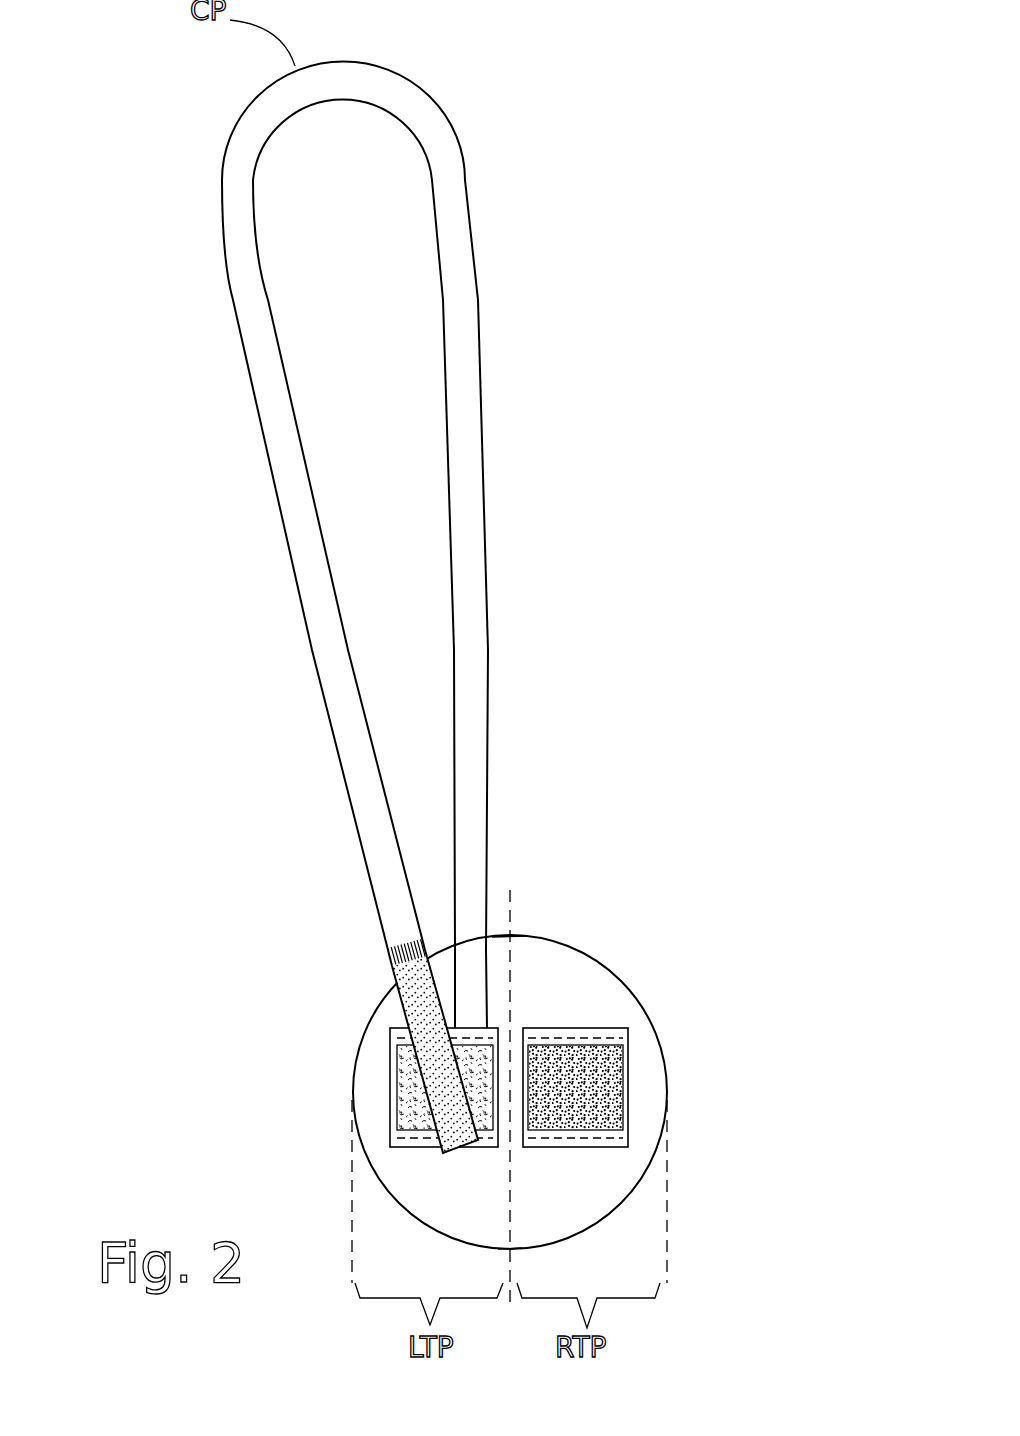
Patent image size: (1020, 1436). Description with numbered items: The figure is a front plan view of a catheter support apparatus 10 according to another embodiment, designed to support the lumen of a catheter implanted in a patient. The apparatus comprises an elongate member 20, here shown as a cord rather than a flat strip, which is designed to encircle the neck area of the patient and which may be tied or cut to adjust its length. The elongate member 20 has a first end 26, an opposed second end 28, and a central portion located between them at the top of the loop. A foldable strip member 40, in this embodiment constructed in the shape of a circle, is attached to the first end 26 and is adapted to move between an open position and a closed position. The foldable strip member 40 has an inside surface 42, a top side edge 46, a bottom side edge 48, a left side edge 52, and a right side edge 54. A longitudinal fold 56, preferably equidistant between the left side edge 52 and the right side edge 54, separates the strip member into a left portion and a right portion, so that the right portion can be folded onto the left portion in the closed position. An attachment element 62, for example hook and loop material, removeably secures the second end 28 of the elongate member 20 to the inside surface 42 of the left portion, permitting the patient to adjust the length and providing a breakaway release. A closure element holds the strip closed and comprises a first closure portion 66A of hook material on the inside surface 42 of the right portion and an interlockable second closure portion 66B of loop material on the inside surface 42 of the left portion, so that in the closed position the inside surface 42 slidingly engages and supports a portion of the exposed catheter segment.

The catheter support apparatus 10 is at (609, 294).
The elongate member 20 is at (195, 226).
The first end 26 is at (468, 983).
The second end 28 is at (398, 935).
The foldable strip member 40 is at (688, 1037).
The inside surface 42 is at (370, 1072).
The top side edge 46 is at (515, 936).
The bottom side edge 48 is at (510, 1248).
The left side edge 52 is at (352, 1098).
The right side edge 54 is at (668, 1097).
The longitudinal fold 56 is at (510, 893).
The attachment element 62 is at (400, 1017).
The first closure portion 66A is at (392, 1117).
The second closure portion 66B is at (568, 1067).